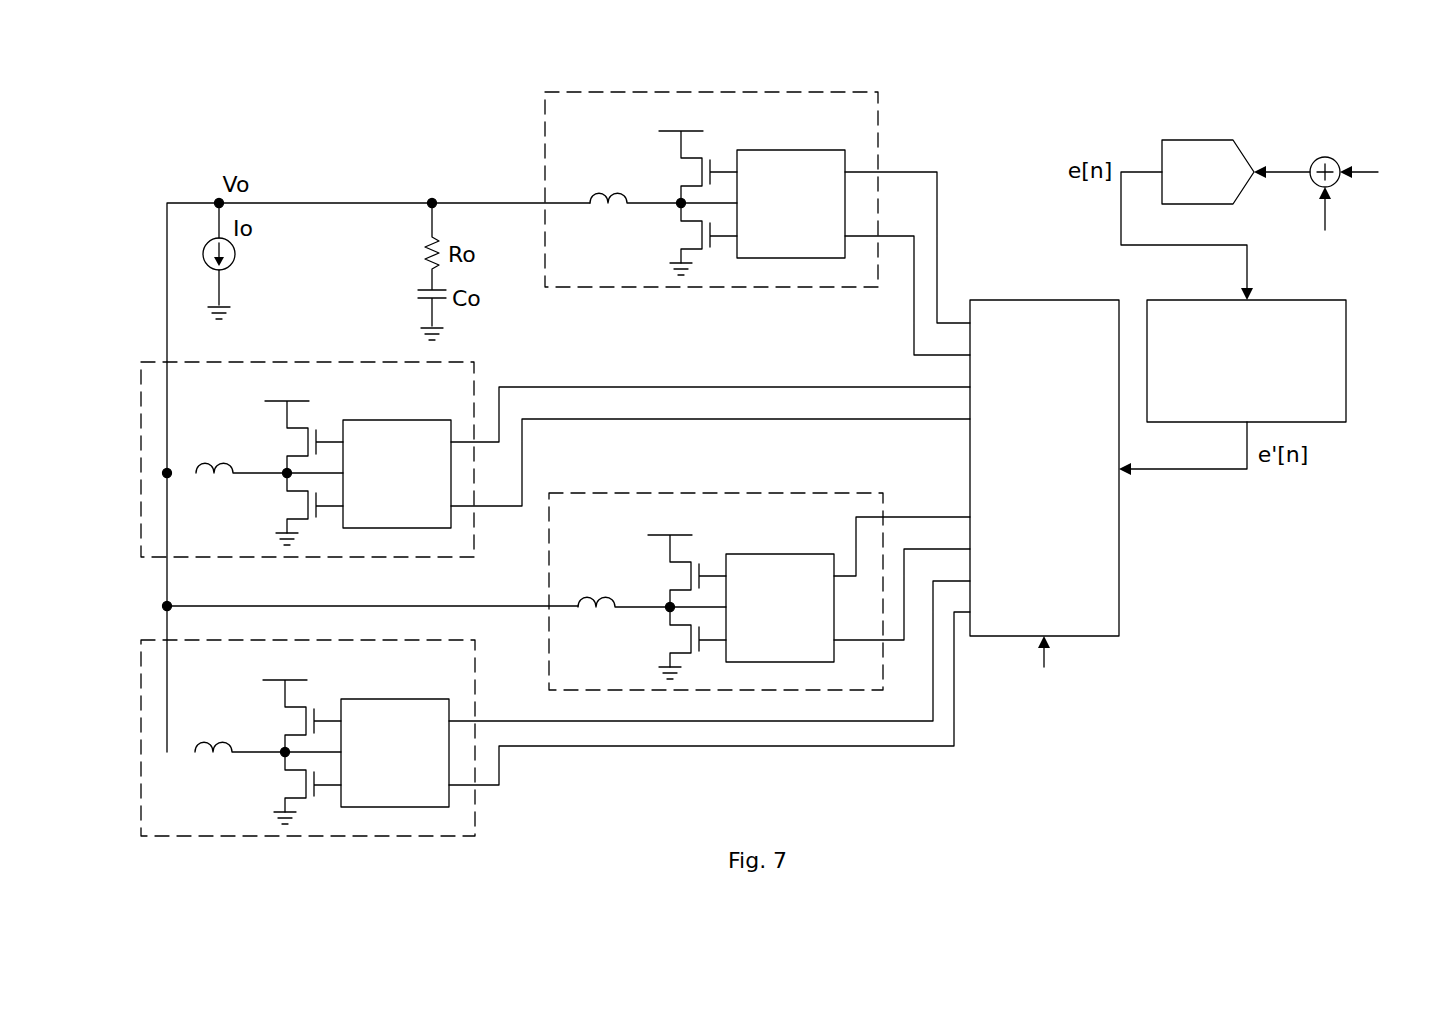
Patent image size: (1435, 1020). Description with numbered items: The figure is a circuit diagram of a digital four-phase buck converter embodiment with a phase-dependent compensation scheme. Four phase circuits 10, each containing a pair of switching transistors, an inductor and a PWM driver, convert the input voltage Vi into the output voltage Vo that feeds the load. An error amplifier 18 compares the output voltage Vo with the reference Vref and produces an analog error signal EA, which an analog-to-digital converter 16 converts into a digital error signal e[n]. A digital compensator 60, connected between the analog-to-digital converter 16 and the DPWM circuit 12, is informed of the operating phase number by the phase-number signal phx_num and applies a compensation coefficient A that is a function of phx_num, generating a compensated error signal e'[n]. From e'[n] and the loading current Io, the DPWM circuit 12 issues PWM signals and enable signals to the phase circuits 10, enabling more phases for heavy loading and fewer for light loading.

The phase circuit 10 is at (708, 287).
The digital pulse width modulation (DPWM) circuit 12 is at (1038, 300).
The analog-to-digital converter (ADC) 16 is at (1196, 140).
The error amplifier 18 is at (1325, 157).
The digital compensator 60 is at (1346, 358).